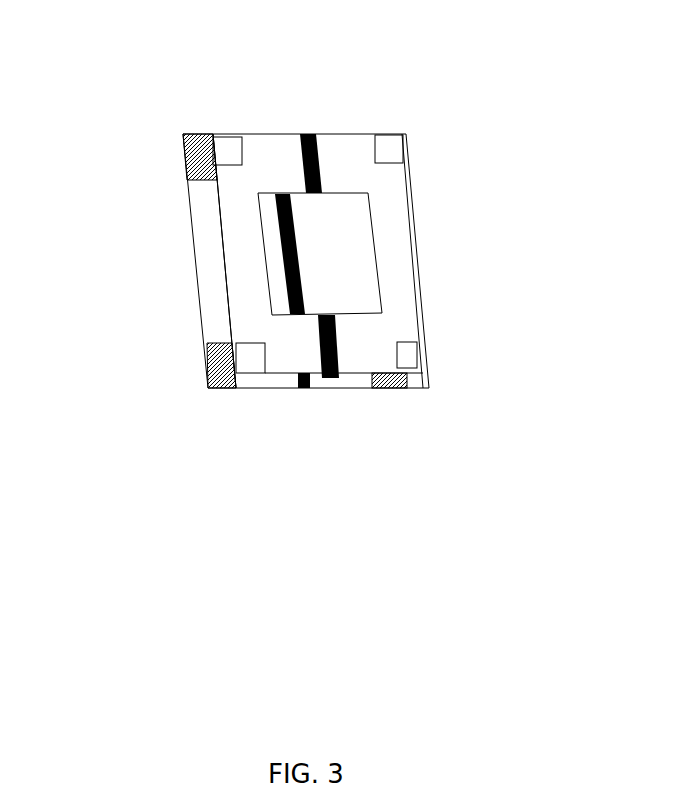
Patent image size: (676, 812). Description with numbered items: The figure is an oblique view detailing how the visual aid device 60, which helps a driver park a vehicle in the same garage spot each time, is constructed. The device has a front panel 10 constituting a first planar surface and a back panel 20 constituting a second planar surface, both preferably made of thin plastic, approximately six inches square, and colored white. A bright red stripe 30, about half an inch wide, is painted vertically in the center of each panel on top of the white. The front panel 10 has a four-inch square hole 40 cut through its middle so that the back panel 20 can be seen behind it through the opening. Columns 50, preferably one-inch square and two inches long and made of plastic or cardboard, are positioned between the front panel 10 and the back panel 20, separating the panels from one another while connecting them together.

The front panel 10 is at (203, 317).
The back panel 20 is at (232, 247).
The red stripe 30 is at (302, 153).
The square hole 40 is at (378, 301).
The columns 50 is at (194, 153).
The visual aid device 60 is at (353, 148).